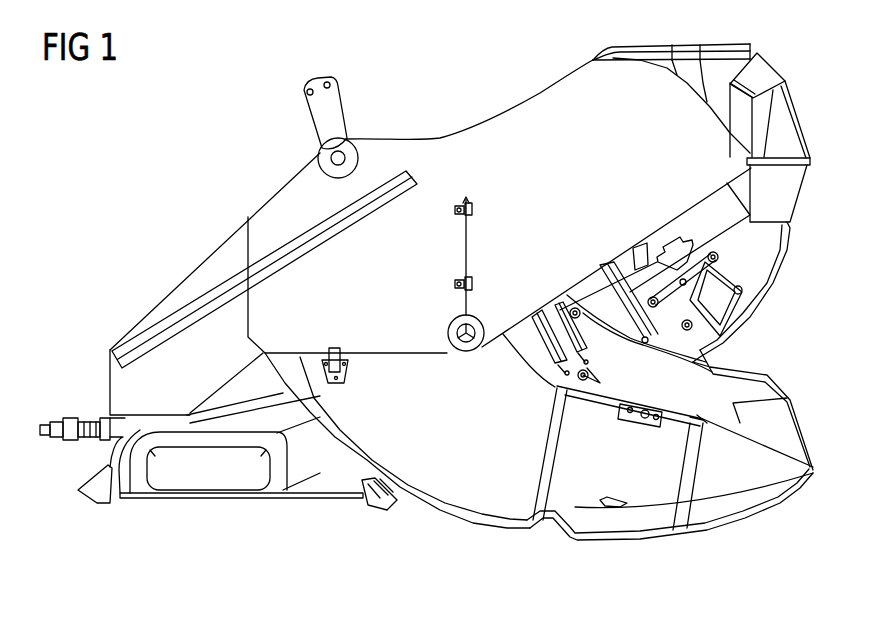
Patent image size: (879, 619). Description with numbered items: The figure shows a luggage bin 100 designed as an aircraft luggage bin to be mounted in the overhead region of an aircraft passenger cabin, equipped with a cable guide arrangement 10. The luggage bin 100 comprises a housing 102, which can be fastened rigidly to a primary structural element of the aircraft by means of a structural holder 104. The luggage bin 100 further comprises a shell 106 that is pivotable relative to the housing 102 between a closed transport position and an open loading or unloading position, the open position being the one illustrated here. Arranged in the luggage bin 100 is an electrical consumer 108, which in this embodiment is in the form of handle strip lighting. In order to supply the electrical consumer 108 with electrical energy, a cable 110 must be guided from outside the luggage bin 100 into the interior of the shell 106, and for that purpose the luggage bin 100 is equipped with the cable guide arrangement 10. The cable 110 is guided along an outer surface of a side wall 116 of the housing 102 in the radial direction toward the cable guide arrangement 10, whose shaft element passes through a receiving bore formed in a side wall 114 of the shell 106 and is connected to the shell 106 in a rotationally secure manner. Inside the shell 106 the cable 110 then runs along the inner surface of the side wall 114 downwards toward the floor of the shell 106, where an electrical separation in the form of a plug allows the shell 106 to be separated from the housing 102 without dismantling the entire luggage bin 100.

The luggage bin 100 is at (250, 185).
The housing 102 is at (553, 117).
The structural holder 104 is at (322, 78).
The shell 106 is at (775, 421).
The electrical consumer 108 is at (555, 524).
The cable 110 is at (476, 249).
The side wall 114 is at (460, 488).
The side wall 116 is at (458, 147).
The cable guide arrangement 10 is at (443, 353).